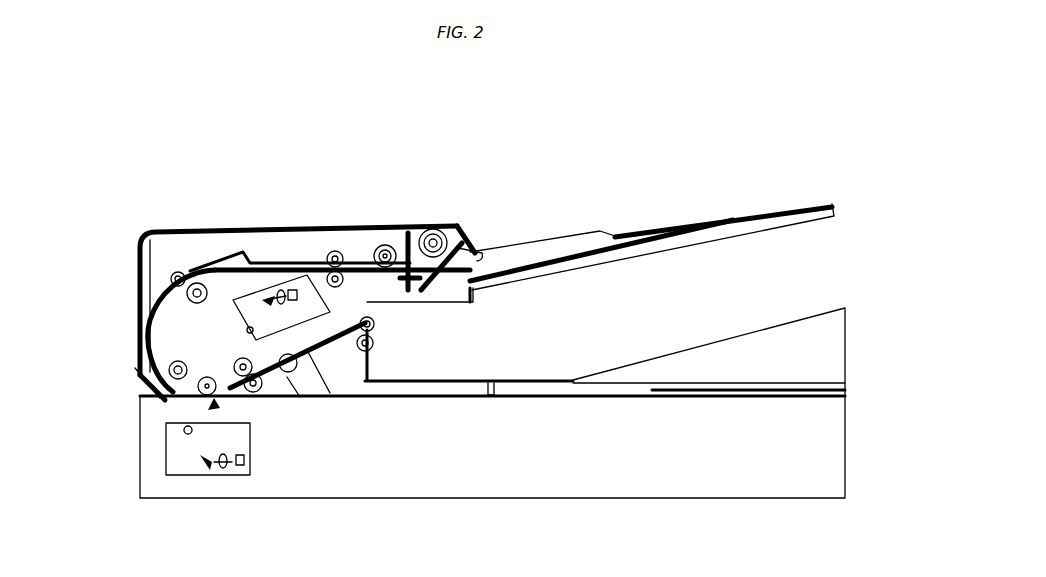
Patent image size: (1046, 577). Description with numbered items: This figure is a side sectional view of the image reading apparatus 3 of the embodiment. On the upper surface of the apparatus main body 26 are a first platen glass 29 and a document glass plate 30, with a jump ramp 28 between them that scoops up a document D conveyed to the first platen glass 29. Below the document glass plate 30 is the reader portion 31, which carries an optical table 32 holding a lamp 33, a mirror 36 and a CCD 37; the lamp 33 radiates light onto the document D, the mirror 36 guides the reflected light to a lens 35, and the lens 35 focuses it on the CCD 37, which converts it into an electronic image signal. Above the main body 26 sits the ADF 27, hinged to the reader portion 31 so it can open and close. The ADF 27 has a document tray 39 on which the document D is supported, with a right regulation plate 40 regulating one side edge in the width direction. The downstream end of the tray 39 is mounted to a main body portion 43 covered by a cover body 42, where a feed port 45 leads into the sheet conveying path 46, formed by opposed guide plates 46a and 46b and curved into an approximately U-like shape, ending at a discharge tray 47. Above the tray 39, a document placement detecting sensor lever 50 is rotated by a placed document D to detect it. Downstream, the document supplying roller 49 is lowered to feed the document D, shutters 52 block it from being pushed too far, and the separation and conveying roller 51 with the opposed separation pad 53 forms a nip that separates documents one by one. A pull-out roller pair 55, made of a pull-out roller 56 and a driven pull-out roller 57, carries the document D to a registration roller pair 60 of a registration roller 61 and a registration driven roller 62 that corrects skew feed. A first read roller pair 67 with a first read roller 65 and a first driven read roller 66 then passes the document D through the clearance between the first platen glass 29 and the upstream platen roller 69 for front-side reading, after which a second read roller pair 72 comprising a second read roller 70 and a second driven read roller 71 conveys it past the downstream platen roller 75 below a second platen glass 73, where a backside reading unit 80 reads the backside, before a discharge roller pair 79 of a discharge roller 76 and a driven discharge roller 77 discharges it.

The image reading apparatus 3 is at (658, 162).
The apparatus main body 26 is at (858, 412).
The ADF 27 is at (134, 222).
The jump ramp 28 is at (247, 428).
The first platen glass 29 is at (170, 465).
The document glass plate 30 is at (476, 402).
The reader portion 31 is at (477, 500).
The optical table 32 is at (248, 478).
The lamp 33 is at (185, 433).
The lens 35 is at (217, 477).
The mirror 36 is at (197, 466).
The CCD 37 is at (238, 477).
The document tray 39 is at (836, 211).
The right regulation plate 40 is at (601, 230).
The cover body 42 is at (252, 224).
The main body portion 43 is at (316, 226).
The feed port 45 is at (466, 270).
The sheet conveying path 46 is at (160, 300).
The guide plate 46a is at (168, 286).
The guide plate 46b is at (152, 309).
The discharge tray 47 is at (517, 378).
The document supplying roller 49 is at (448, 236).
The document placement detecting sensor lever 50 is at (482, 248).
The separation and conveying roller 51 is at (383, 244).
The shutters 52 is at (409, 238).
The separation pad 53 is at (392, 278).
The pull-out roller pair 55 is at (316, 254).
The pull-out roller 56 is at (308, 262).
The driven pull-out roller 57 is at (336, 250).
The registration roller pair 60 is at (178, 260).
The registration roller 61 is at (210, 266).
The registration driven roller 62 is at (172, 272).
The first read roller 65 is at (150, 358).
The first driven read roller 66 is at (147, 388).
The first read roller pair 67 is at (167, 403).
The upstream platen roller 69 is at (214, 382).
The second read roller 70 is at (268, 372).
The second driven read roller 71 is at (280, 425).
The second read roller pair 72 is at (273, 398).
The second platen glass 73 is at (300, 352).
The downstream platen roller 75 is at (350, 400).
The discharge roller 76 is at (373, 321).
The driven discharge roller 77 is at (373, 349).
The discharge roller pair 79 is at (388, 341).
The backside reading unit 80 is at (283, 281).
The document D is at (686, 232).